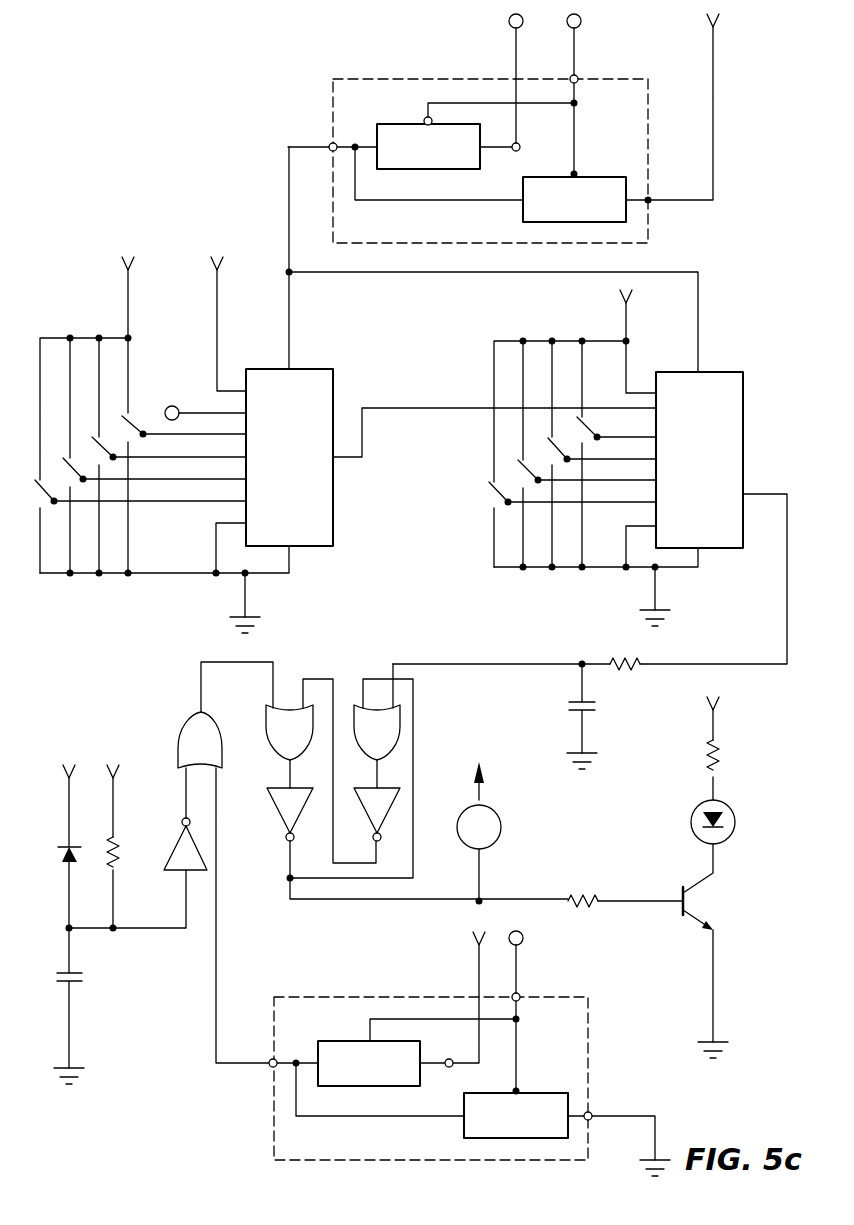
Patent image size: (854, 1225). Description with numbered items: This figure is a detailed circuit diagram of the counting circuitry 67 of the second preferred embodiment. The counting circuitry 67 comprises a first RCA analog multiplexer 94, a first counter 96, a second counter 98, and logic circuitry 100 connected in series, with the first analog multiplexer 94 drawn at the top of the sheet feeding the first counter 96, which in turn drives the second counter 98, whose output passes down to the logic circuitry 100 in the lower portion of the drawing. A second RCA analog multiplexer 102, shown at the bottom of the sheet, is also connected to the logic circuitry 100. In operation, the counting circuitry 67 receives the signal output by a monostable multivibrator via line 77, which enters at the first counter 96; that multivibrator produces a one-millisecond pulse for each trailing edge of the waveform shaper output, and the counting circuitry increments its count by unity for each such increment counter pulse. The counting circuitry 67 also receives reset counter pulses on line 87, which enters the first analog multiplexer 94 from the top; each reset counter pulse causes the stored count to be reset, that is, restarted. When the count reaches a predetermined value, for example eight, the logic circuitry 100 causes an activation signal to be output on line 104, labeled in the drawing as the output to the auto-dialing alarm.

The counting circuitry 67 is at (152, 196).
The line 77 is at (190, 412).
The line 87 is at (516, 53).
The first RCA CD 4053 analog multiplexer 94 is at (648, 152).
The first counter 96 is at (321, 368).
The second counter 98 is at (733, 371).
The logic circuitry 100 is at (142, 666).
The second RCA CD 4053 analog multiplexer 102 is at (588, 1063).
The line 104 is at (480, 871).